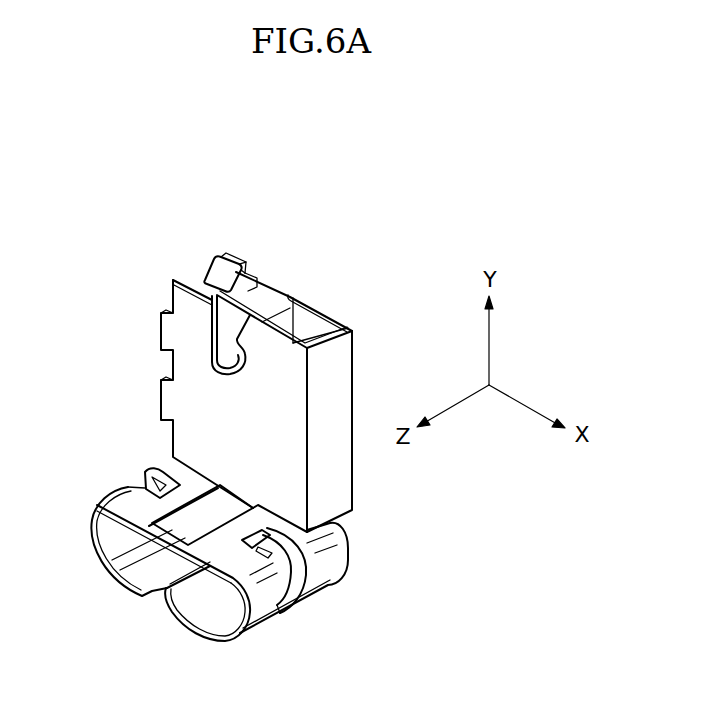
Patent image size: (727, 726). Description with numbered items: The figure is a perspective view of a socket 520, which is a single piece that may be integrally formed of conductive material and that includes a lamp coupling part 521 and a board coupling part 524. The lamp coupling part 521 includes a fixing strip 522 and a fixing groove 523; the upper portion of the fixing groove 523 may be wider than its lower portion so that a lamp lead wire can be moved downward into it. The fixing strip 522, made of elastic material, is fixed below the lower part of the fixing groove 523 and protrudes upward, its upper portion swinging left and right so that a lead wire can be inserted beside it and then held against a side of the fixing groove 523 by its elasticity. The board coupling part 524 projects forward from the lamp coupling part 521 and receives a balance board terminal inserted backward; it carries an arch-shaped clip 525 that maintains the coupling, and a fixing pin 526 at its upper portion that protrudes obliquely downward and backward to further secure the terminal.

The socket 520 is at (150, 241).
The lamp coupling part 521 is at (321, 305).
The fixing strip 522 is at (229, 253).
The fixing groove 523 is at (210, 338).
The board coupling part 524 is at (150, 476).
The clip 525 is at (182, 614).
The fixing pin 526 is at (303, 562).